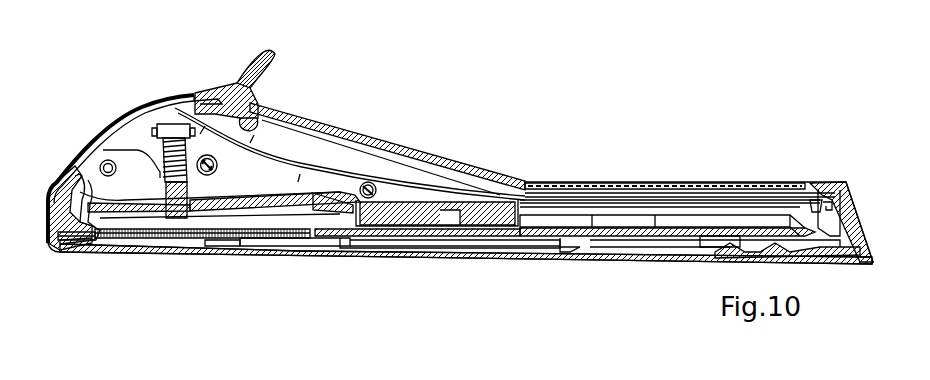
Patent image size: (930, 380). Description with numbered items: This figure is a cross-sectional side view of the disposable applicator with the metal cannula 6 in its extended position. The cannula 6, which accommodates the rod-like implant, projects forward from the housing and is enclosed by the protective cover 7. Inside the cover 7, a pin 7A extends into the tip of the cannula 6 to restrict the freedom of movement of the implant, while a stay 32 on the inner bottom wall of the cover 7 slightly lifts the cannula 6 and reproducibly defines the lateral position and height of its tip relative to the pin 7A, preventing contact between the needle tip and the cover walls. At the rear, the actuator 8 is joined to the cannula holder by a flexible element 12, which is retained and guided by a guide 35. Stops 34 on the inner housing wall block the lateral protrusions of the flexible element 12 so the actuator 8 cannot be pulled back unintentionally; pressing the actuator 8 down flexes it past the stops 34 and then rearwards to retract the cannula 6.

The actuator 8 is at (258, 54).
The stops 34 is at (256, 118).
The guide 35 is at (283, 155).
The flexible element 12 is at (356, 165).
The pin 7A is at (61, 240).
The protective cover 7 is at (136, 256).
The cannula 6 is at (184, 238).
The stay 32 is at (215, 244).